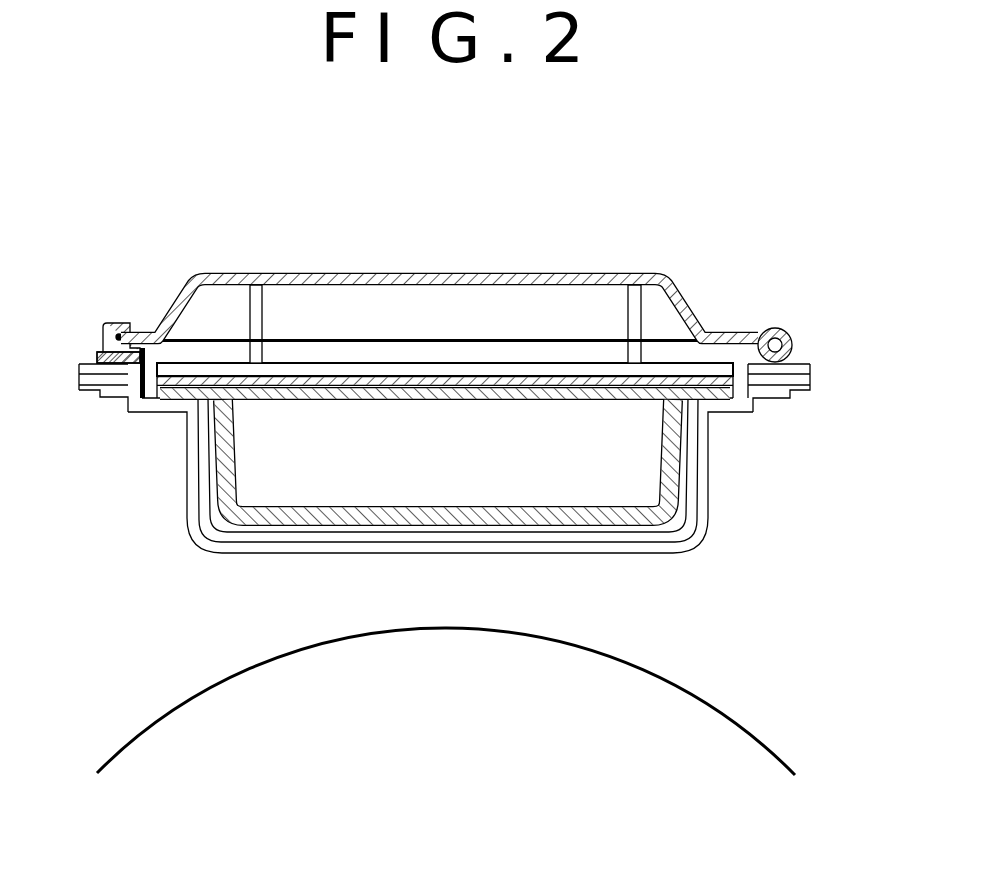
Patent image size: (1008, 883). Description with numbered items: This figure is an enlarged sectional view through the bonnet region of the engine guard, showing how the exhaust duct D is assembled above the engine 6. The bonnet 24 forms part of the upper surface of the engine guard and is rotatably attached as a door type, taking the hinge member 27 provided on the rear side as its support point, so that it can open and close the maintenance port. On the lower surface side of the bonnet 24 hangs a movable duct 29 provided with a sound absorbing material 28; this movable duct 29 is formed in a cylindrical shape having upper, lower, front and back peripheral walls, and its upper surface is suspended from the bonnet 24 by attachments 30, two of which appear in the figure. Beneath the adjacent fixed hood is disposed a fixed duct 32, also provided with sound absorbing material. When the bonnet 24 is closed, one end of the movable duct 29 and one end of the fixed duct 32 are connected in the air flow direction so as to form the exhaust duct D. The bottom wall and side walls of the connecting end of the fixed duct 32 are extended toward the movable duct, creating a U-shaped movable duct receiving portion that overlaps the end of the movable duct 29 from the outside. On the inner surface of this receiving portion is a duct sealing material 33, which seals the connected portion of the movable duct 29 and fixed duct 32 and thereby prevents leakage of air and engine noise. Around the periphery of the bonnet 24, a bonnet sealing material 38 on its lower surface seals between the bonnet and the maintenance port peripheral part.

The bonnet 24 is at (440, 272).
The attachment 30 is at (262, 318).
The bonnet sealing material 38 is at (95, 352).
The hinge member 27 is at (791, 330).
The sound absorbing material 28 is at (430, 508).
The movable duct 29 is at (437, 511).
The duct sealing material 33 is at (345, 548).
The fixed duct 32 is at (692, 547).
The engine 6 is at (745, 722).
The exhaust duct D is at (205, 548).